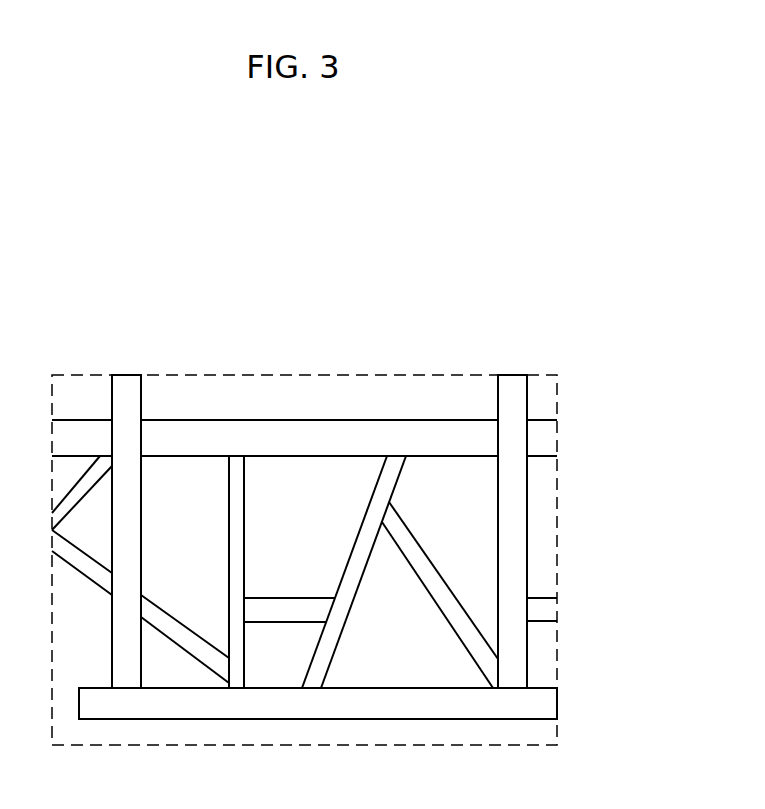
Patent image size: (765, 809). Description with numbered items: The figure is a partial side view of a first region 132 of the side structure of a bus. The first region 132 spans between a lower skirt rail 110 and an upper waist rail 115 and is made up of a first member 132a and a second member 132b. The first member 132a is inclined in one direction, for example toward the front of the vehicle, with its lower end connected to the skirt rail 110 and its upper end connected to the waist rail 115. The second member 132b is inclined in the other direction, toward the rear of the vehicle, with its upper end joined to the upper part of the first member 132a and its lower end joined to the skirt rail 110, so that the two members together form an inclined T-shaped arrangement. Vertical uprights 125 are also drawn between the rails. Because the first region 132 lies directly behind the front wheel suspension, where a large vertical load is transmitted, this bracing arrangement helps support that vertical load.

The skirt rail 110 is at (538, 700).
The waist rail 115 is at (542, 430).
The vertical support column 125 is at (127, 398).
The first region 132 is at (371, 475).
The first member 132a is at (360, 553).
The second member 132b is at (425, 567).